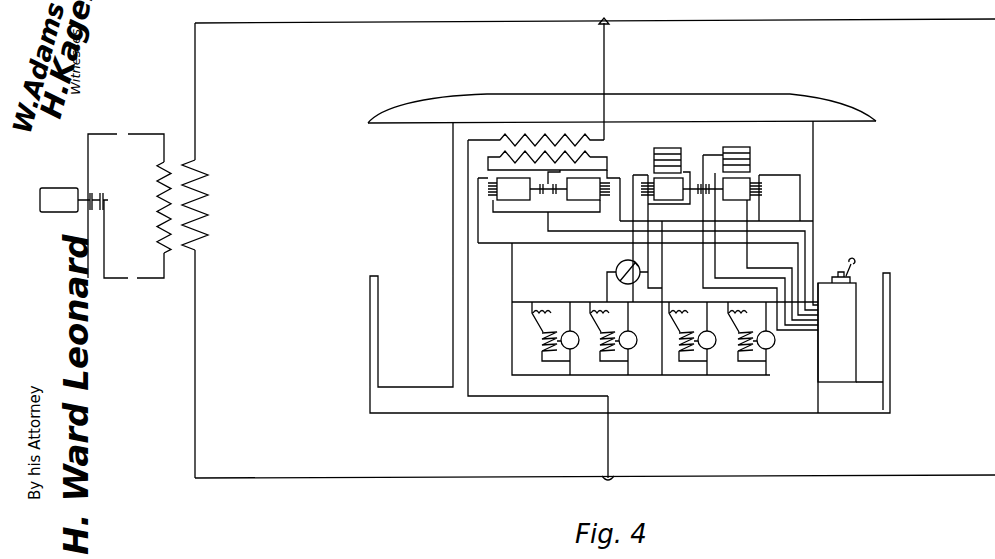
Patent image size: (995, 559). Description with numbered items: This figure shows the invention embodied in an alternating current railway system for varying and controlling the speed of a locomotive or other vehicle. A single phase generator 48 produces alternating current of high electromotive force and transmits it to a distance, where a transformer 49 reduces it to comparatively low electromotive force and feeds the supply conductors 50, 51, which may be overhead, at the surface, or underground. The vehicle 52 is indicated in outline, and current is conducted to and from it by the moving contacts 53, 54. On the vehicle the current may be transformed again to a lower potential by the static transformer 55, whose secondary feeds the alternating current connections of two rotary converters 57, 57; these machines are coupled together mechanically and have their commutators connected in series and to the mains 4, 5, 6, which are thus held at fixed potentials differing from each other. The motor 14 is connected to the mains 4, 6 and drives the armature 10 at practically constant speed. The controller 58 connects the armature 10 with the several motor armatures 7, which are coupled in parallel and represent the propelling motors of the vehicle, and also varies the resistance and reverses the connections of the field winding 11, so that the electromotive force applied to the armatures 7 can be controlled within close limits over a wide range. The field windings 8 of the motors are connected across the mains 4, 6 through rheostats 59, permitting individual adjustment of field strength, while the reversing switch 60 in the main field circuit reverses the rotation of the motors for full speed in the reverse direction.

The main 4 is at (648, 273).
The main 5 is at (683, 261).
The main 6 is at (716, 215).
The motor armature 7 is at (646, 338).
The field winding 8 is at (646, 338).
The armature 10 is at (742, 189).
The field winding 11 is at (740, 152).
The motor 14 is at (662, 174).
The single phase generator 48 is at (74, 200).
The transformer 49 is at (129, 206).
The supply conductor 50 is at (595, 13).
The supply conductor 51 is at (382, 477).
The vehicle 52 is at (514, 108).
The moving contact 53 is at (608, 27).
The moving contact 54 is at (611, 472).
The static transformer 55 is at (578, 156).
The rotary converter 57 is at (549, 191).
The controller 58 is at (837, 320).
The rheostat 59 is at (646, 338).
The reversing switch 60 is at (618, 279).